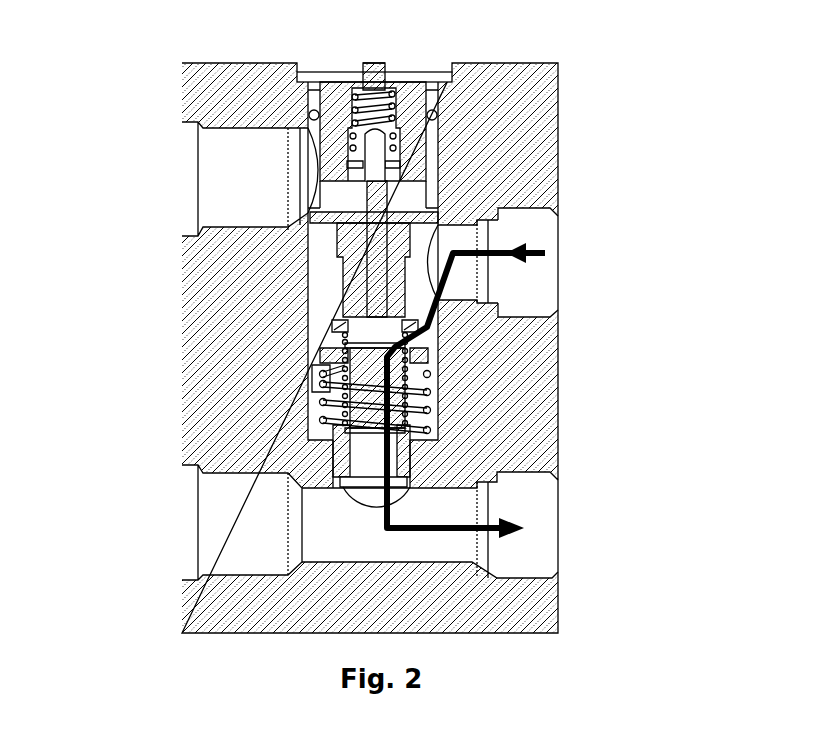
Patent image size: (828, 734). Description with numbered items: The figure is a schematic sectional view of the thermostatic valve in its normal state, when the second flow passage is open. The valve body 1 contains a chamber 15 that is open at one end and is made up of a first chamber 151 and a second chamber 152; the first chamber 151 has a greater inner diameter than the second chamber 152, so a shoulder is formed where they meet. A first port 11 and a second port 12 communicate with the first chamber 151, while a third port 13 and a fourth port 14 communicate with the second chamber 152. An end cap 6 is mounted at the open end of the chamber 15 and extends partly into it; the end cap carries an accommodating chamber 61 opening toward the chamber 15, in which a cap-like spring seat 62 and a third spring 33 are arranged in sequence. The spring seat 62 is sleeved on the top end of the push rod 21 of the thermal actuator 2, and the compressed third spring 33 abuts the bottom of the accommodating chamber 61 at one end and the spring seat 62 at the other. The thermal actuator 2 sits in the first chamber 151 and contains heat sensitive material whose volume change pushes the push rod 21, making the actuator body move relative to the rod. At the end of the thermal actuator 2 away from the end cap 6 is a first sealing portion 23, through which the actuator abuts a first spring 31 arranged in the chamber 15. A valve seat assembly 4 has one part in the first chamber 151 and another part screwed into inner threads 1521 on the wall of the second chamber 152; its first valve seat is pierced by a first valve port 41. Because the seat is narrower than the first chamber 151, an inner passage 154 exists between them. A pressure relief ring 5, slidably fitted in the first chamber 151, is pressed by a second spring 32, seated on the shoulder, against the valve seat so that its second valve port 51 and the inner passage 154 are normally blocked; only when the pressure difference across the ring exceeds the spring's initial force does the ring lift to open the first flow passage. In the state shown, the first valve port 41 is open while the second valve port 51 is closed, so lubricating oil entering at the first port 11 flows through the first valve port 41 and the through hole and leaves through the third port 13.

The valve body 1 is at (214, 101).
The second port 12 is at (237, 195).
The chamber 15 is at (328, 288).
The second chamber 152 is at (337, 475).
The fourth port 14 is at (237, 532).
The first chamber 151 is at (418, 270).
The first port 11 is at (522, 273).
The third port 13 is at (528, 527).
The end cap 6 is at (417, 103).
The spring seat 62 is at (358, 128).
The third spring 33 is at (352, 92).
The accommodating chamber 61 is at (390, 118).
The push rod 21 is at (400, 168).
The thermal actuator 2 is at (400, 240).
The valve seat assembly 4 is at (322, 360).
The first valve port 41 is at (345, 347).
The first sealing portion 23 is at (430, 334).
The pressure relief ring 5 is at (317, 363).
The inner passage 154 is at (433, 355).
The second spring 32 is at (320, 420).
The second valve port 51 is at (438, 373).
The first spring 31 is at (438, 400).
The inner threads 1521 is at (423, 460).